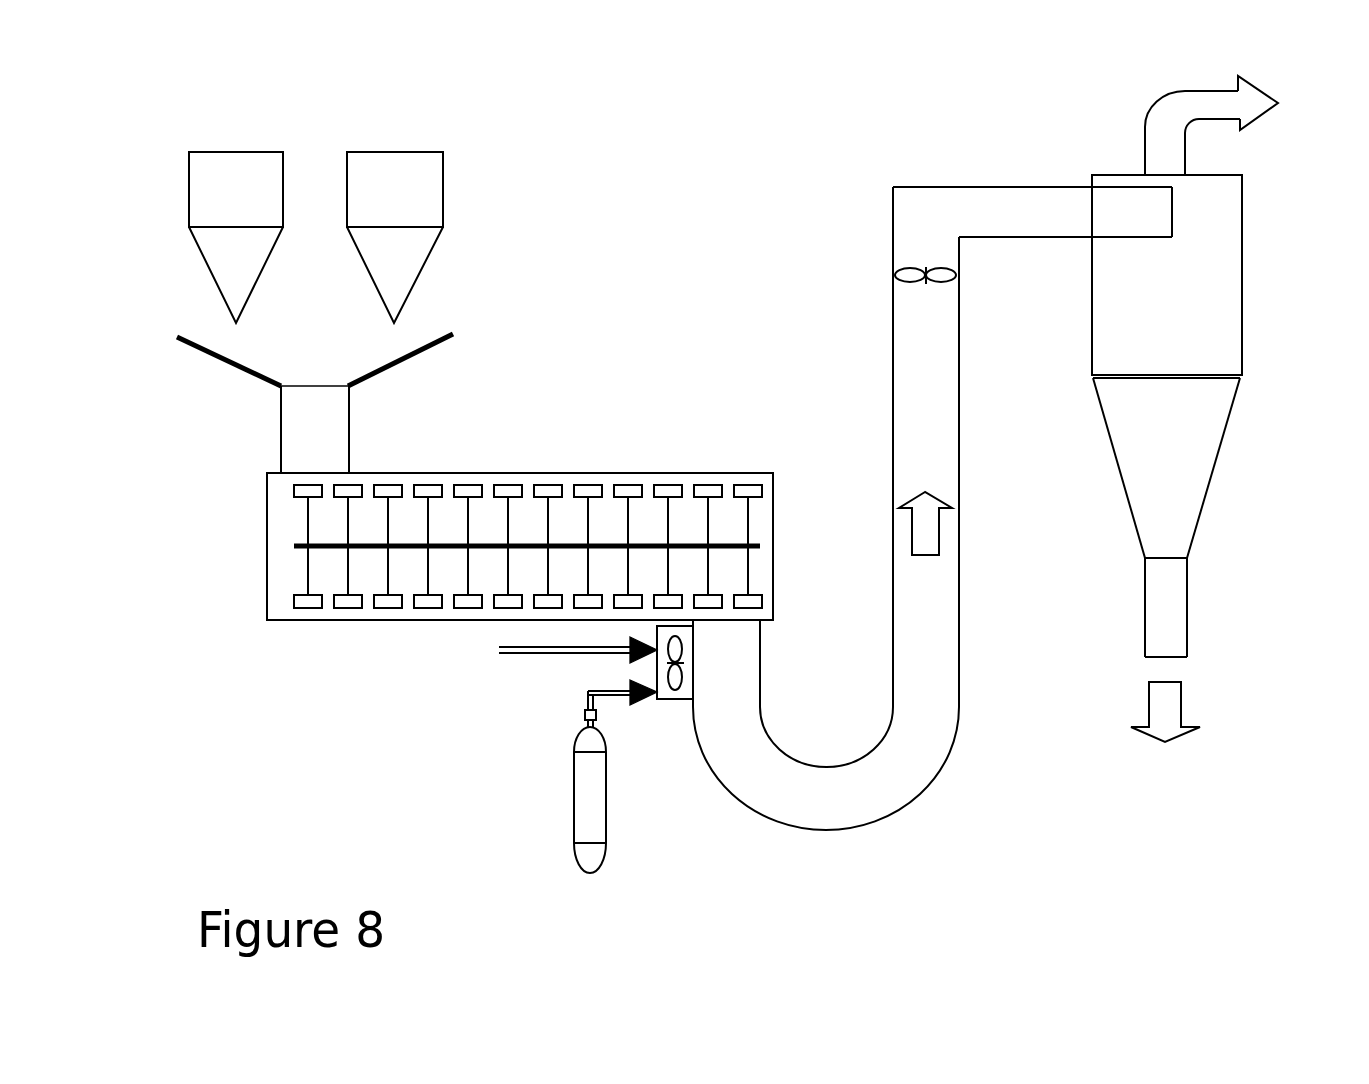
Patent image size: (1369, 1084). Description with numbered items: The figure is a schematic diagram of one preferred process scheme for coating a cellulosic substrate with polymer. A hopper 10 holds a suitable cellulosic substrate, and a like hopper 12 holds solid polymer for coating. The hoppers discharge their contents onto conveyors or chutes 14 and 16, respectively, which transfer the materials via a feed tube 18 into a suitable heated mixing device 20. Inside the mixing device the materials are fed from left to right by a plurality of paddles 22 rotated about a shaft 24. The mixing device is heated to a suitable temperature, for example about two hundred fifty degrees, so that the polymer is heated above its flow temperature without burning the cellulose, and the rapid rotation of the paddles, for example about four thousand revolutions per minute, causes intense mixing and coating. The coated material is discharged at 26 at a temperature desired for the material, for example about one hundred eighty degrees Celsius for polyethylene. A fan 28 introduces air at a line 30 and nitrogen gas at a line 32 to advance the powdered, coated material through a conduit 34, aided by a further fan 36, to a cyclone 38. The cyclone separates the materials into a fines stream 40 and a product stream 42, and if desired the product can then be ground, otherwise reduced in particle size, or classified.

The hopper 10 is at (222, 201).
The hopper 12 is at (380, 201).
The conveyor or chute 14 is at (233, 365).
The conveyor or chute 16 is at (455, 335).
The feed tube 18 is at (308, 438).
The heated mixing device 20 is at (248, 561).
The paddles 22 is at (547, 488).
The shaft 24 is at (720, 545).
The discharge 26 is at (713, 665).
The fan 28 is at (676, 693).
The air line 30 is at (558, 654).
The nitrogen gas line 32 is at (580, 698).
The conduit 34 is at (925, 447).
The fan 36 is at (922, 270).
The cyclone 38 is at (1151, 320).
The fines stream 40 is at (1243, 130).
The product stream 42 is at (1168, 730).